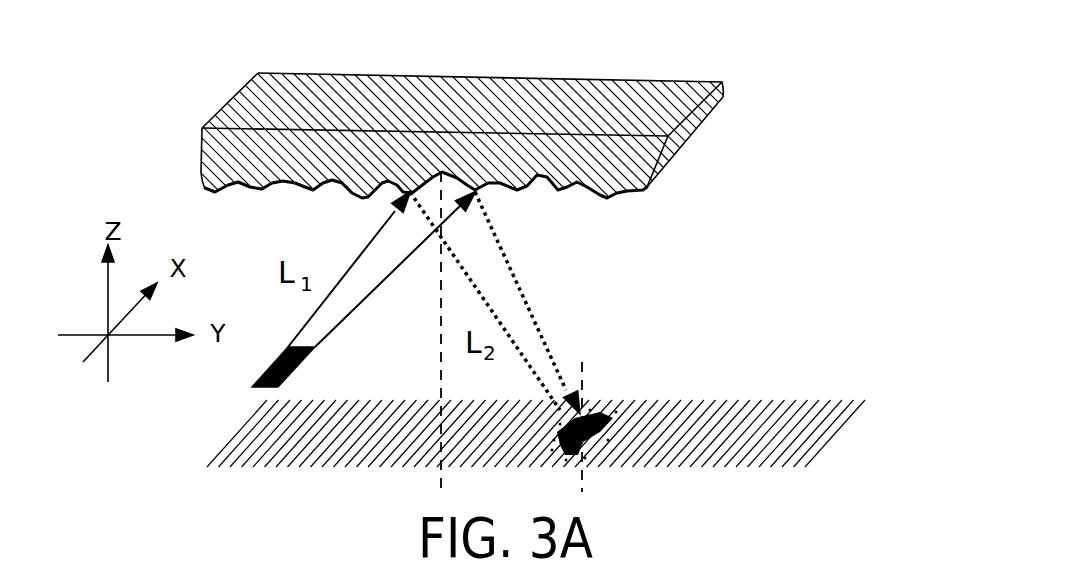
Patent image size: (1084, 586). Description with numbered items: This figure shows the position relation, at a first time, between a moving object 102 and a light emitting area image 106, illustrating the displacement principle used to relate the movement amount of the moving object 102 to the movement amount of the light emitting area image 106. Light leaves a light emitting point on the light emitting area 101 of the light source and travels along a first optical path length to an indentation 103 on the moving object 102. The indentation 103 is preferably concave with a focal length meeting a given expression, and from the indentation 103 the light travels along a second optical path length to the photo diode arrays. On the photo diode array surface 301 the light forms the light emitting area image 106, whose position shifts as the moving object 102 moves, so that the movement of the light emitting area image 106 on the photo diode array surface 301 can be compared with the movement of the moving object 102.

The light emitting area 101 is at (252, 387).
The moving object 102 is at (695, 138).
The indentation 103 is at (442, 172).
The light emitting area image 106 is at (600, 417).
The photo diode array surface 301 is at (807, 442).